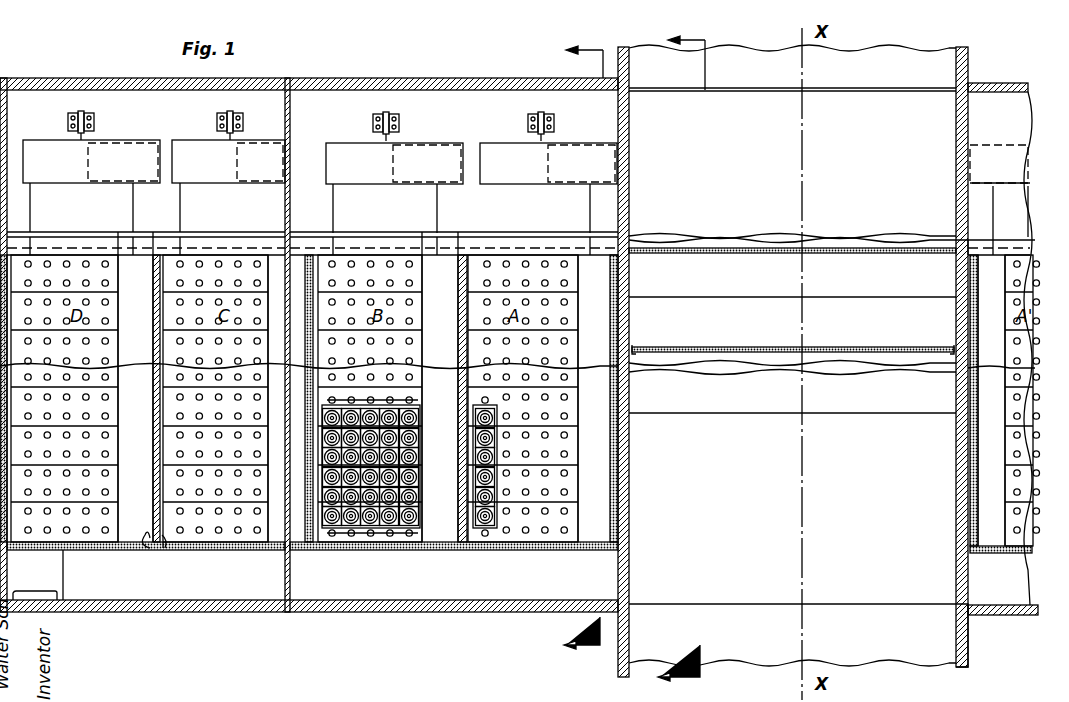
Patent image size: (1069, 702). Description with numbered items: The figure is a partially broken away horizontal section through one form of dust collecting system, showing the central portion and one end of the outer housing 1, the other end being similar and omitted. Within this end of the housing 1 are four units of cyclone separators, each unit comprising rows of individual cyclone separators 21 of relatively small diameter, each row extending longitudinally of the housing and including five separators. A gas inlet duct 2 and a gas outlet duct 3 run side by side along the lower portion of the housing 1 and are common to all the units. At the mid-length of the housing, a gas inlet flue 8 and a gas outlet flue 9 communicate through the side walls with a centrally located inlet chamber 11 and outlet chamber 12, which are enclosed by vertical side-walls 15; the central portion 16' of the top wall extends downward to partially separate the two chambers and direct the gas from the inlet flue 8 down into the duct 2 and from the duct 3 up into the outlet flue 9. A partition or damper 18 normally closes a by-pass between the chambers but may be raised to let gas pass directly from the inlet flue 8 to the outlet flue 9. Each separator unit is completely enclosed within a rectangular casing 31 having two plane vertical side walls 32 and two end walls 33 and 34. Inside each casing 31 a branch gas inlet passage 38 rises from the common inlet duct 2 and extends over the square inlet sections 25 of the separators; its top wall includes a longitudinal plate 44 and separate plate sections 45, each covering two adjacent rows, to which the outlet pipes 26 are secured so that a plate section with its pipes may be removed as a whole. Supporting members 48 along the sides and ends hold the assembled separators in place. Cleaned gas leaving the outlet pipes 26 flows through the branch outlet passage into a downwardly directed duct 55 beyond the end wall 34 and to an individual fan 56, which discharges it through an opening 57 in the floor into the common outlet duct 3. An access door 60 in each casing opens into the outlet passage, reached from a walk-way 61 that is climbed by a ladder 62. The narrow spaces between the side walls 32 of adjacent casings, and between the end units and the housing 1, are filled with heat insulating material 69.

The outer housing 1 is at (460, 78).
The gas inlet duct 2 is at (692, 39).
The gas outlet duct 3 is at (597, 47).
The gas inlet flue 8 is at (935, 632).
The gas outlet flue 9 is at (948, 62).
The inlet chamber 11 is at (748, 508).
The outlet chamber 12 is at (728, 170).
The vertical side-walls 15 is at (968, 110).
The central portion of top wall 16' is at (792, 287).
The partition or damper 18 is at (862, 345).
The cyclone separators 21 is at (333, 545).
The inlet sections 25 is at (388, 466).
The outlet pipes 26 is at (410, 486).
The casing 31 is at (150, 548).
The side walls 32 is at (153, 488).
The end wall 33 is at (190, 548).
The end wall 34 is at (398, 255).
The branch gas inlet passage 38 is at (455, 459).
The plate 44 is at (1000, 407).
The plate sections 45 is at (108, 482).
The supporting members 48 is at (470, 516).
The duct 55 is at (192, 206).
The fan 56 is at (192, 148).
The opening 57 is at (266, 143).
The access door 60 is at (90, 550).
The walk-way 61 is at (380, 583).
The ladder 62 is at (40, 592).
The heat insulating material 69 is at (153, 355).